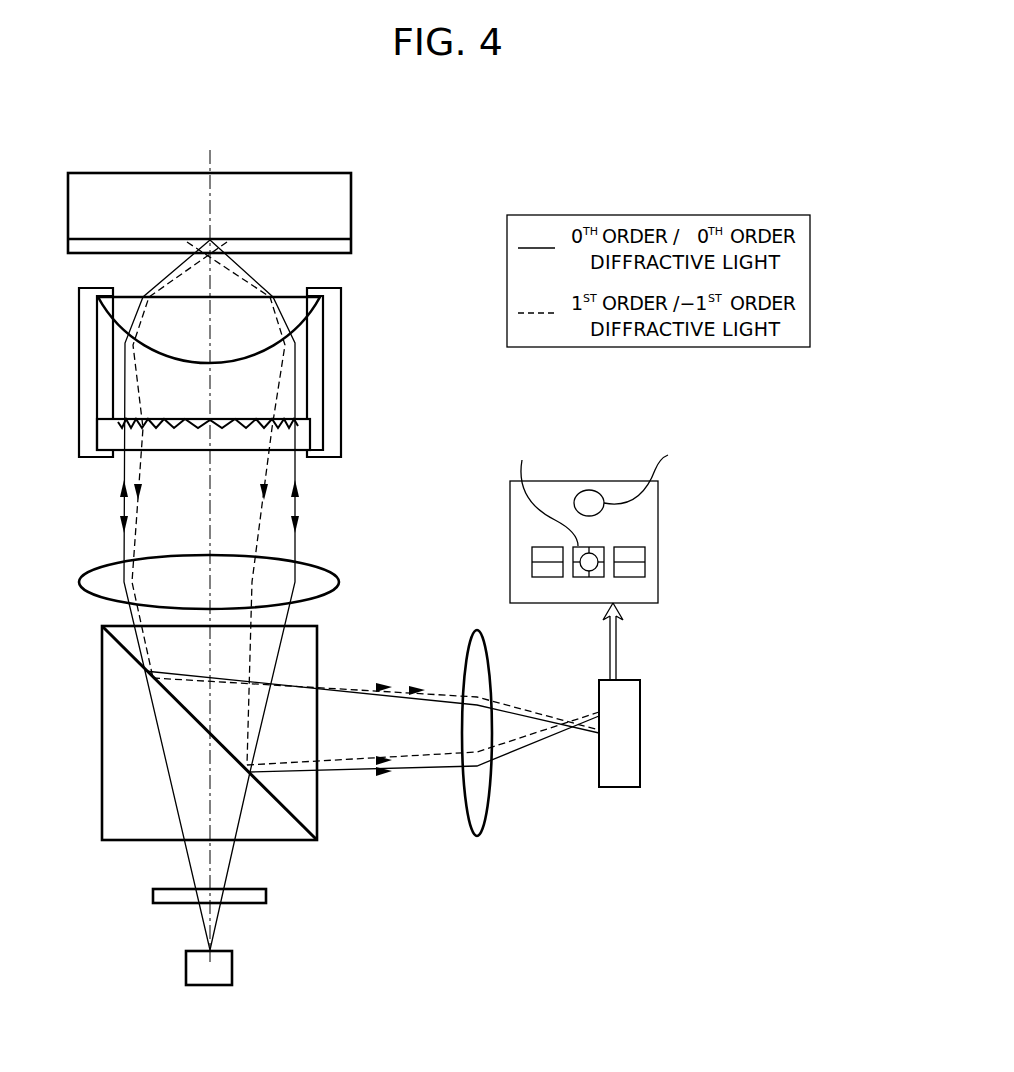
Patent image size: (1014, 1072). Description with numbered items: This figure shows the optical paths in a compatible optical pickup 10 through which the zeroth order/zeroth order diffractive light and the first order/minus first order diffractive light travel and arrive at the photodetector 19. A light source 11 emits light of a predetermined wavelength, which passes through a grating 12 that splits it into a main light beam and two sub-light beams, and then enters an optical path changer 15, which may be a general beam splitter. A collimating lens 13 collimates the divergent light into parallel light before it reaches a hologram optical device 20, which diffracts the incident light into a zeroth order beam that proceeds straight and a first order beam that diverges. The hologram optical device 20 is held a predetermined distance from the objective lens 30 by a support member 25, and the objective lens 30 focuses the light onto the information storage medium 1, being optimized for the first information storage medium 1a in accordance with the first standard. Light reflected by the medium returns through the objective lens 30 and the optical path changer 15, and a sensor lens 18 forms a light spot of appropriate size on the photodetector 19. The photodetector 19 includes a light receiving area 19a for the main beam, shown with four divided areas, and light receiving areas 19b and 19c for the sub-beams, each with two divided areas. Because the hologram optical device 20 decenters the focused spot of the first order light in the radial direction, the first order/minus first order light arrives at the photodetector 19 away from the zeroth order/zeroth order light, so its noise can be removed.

The information storage medium 1 is at (370, 166).
The first information storage medium 1a is at (344, 207).
The compatible optical pickup 10 is at (409, 357).
The light source 11 is at (228, 968).
The grating 12 is at (263, 893).
The collimating lens 13 is at (333, 583).
The optical path changer 15 is at (100, 745).
The sensor lens 18 is at (476, 832).
The photodetector 19 is at (620, 790).
The light receiving area 19a is at (580, 578).
The light receiving area 19b is at (541, 578).
The light receiving area 19c is at (633, 578).
The hologram optical device 20 is at (305, 434).
The support member 25 is at (331, 358).
The objective lens 30 is at (310, 306).